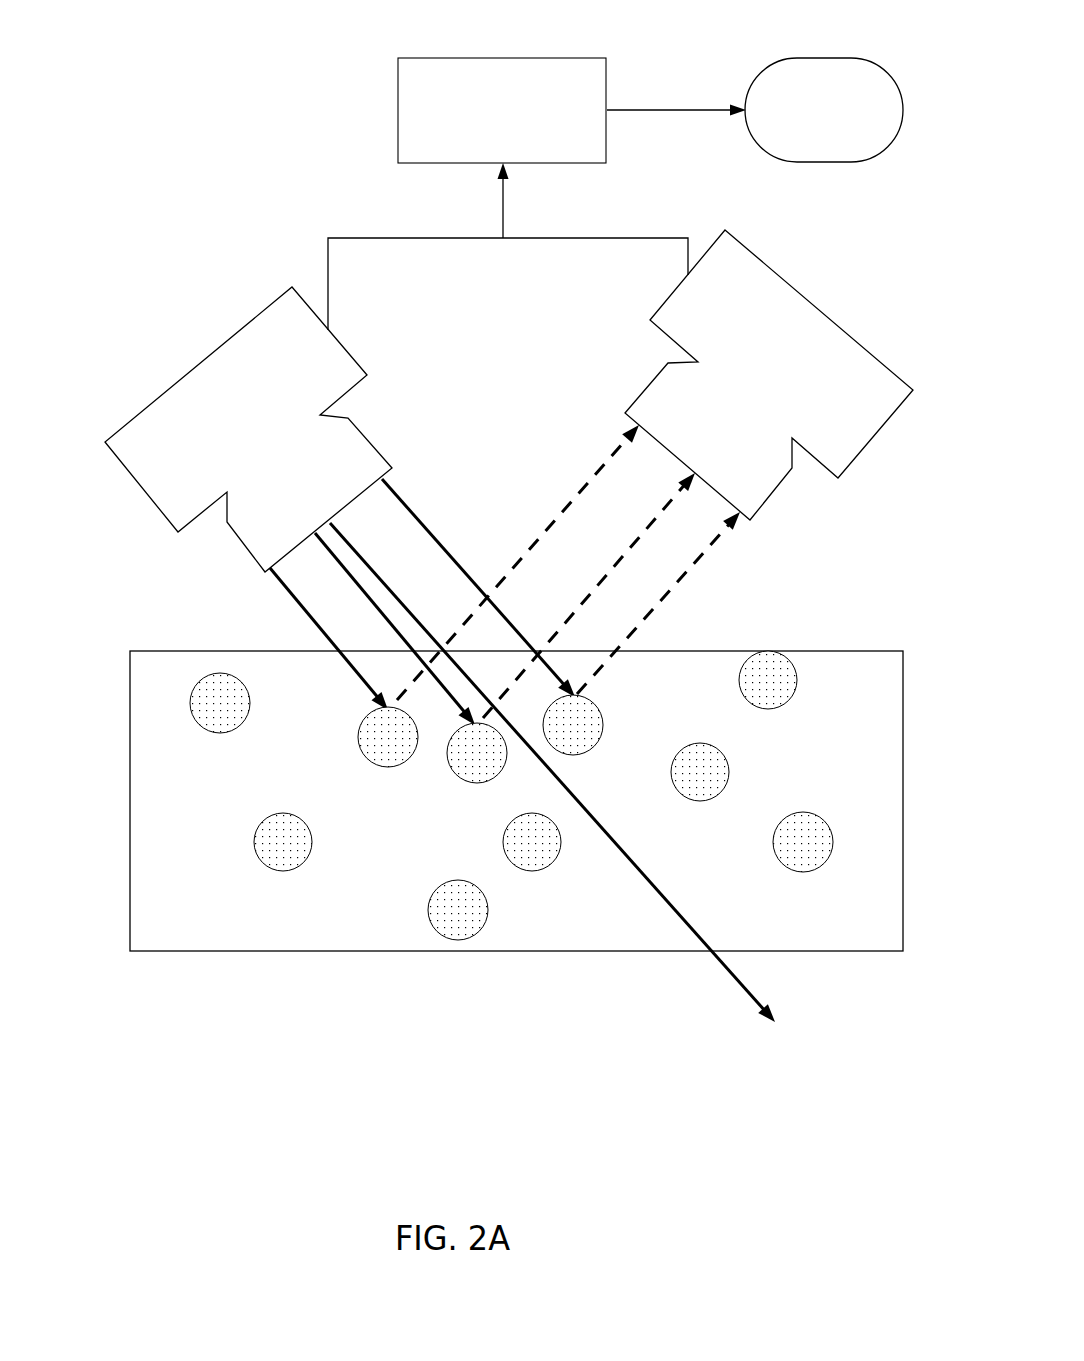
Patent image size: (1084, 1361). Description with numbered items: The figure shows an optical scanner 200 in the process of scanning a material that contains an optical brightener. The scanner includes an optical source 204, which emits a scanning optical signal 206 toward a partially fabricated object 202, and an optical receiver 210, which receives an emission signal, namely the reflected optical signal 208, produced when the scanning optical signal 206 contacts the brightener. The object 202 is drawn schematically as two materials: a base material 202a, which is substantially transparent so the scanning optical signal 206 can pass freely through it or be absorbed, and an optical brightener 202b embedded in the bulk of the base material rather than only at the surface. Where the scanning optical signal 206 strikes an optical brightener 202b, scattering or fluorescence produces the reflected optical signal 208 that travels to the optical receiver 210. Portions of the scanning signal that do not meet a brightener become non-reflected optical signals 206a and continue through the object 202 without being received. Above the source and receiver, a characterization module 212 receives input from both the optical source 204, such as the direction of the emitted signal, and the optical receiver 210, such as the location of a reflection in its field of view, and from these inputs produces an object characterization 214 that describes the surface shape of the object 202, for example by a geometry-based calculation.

The optical scanner 200 is at (242, 75).
The partially fabricated object 202 is at (517, 952).
The base material 202a is at (187, 912).
The optical brightener 202b is at (359, 738).
The optical source 204 is at (193, 365).
The scanning optical signal 206 is at (466, 498).
The non-reflected optical signal 206a is at (727, 972).
The reflected optical signal 208 is at (726, 588).
The optical receiver 210 is at (820, 310).
The characterization module 212 is at (502, 110).
The object characterization 214 is at (824, 110).